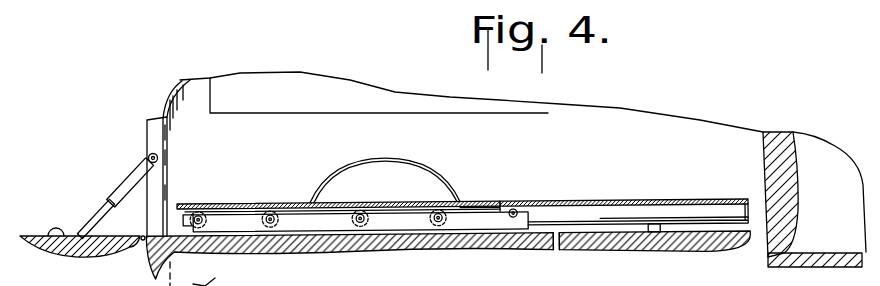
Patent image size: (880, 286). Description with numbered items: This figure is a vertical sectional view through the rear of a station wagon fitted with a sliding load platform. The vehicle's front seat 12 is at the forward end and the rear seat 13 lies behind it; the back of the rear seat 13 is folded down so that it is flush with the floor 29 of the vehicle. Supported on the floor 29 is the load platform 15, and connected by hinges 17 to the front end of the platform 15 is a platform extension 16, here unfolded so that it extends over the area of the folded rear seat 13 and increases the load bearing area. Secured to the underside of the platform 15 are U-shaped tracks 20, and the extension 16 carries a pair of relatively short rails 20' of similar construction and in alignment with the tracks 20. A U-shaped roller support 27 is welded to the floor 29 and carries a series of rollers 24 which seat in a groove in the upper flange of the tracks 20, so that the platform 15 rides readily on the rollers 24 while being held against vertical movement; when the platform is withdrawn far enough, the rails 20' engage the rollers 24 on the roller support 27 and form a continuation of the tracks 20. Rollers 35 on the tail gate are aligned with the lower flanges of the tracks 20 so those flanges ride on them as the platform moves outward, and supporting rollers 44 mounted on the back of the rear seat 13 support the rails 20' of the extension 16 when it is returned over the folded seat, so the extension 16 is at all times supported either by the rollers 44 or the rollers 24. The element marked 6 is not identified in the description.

The upright post 6 is at (167, 157).
The front seat 12 is at (766, 150).
The rear seat 13 is at (722, 244).
The load platform 15 is at (293, 203).
The platform extension 16 is at (606, 201).
The hinges 17 is at (497, 205).
The tracks 20 is at (480, 187).
The rails 20' is at (674, 193).
The rollers 24 is at (270, 212).
The roller support 27 is at (404, 223).
The floor 29 is at (556, 233).
The rollers 35 is at (57, 228).
The supporting rollers 44 is at (660, 228).